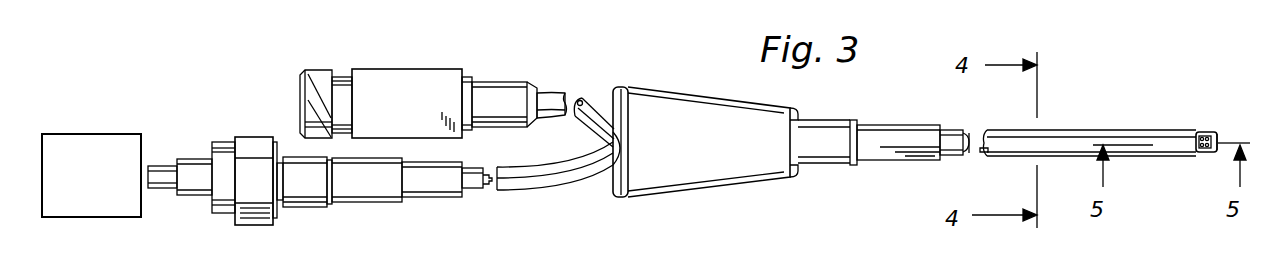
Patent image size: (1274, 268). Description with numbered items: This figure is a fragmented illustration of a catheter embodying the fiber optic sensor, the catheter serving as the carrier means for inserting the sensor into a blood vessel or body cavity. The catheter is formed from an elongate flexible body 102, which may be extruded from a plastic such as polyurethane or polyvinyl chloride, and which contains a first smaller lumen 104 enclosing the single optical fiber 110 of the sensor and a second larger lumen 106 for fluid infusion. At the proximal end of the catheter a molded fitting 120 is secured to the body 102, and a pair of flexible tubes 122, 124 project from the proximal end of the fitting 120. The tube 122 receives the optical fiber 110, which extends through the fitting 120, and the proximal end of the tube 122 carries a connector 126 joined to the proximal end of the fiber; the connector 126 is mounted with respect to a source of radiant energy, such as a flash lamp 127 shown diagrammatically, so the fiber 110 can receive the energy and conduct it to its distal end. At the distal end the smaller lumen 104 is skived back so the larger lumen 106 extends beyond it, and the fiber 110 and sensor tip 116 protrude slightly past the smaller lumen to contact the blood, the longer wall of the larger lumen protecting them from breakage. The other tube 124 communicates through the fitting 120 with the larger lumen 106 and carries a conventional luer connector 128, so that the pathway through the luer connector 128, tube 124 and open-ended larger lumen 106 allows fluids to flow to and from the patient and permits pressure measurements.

The elongate flexible body 102 is at (950, 125).
The first smaller lumen 104 is at (1203, 134).
The second larger lumen 106 is at (1218, 154).
The optical fiber 110 is at (985, 131).
The sensor tip 116 is at (1212, 134).
The molded fitting 120 is at (698, 94).
The tube 122 is at (553, 182).
The tube 124 is at (590, 100).
The connector 126 is at (253, 137).
The flash lamp 127 is at (100, 188).
The luer connector 128 is at (428, 70).